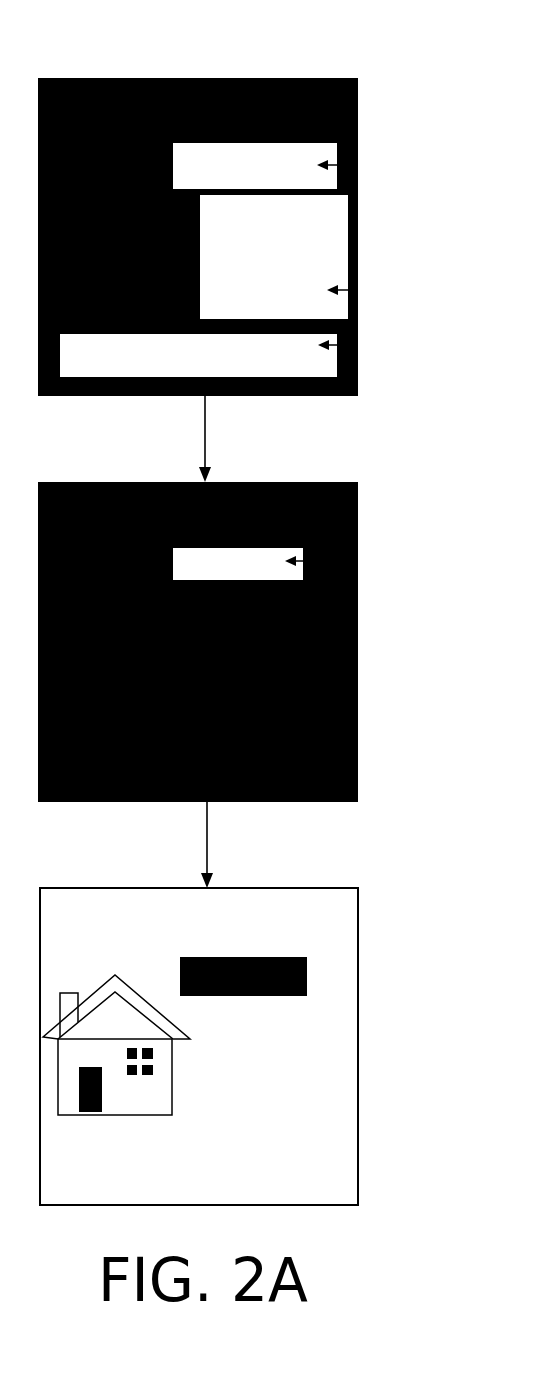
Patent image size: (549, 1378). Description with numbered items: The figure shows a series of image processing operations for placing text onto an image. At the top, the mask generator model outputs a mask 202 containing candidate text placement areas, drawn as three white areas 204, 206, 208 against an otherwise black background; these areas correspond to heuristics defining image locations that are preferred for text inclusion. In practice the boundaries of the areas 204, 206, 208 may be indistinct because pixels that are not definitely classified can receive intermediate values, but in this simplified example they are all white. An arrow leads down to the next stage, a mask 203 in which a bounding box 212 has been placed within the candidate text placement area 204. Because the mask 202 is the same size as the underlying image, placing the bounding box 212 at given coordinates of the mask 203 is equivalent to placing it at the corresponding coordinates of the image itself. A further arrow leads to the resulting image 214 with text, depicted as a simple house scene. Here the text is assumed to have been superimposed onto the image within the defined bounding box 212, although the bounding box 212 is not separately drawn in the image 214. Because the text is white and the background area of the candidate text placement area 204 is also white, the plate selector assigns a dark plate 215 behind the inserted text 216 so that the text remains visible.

The mask 202 is at (69, 74).
The candidate text placement area 204 is at (358, 170).
The candidate text placement area 206 is at (358, 292).
The candidate text placement area 208 is at (358, 352).
The mask with bounding box 203 is at (247, 476).
The bounding box 212 is at (305, 562).
The image with text 214 is at (199, 1046).
The plate 215 is at (314, 990).
The inserted text 216 is at (199, 955).